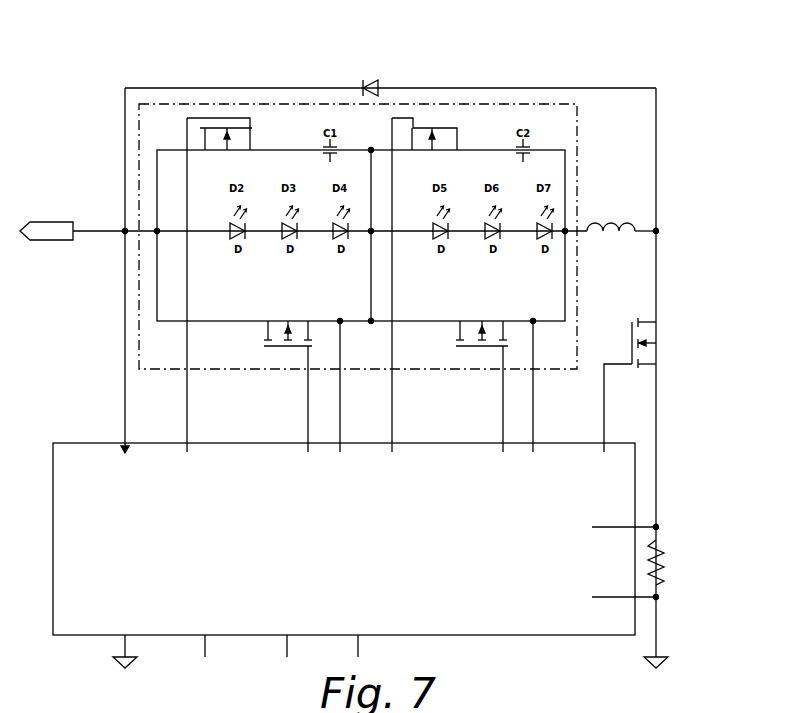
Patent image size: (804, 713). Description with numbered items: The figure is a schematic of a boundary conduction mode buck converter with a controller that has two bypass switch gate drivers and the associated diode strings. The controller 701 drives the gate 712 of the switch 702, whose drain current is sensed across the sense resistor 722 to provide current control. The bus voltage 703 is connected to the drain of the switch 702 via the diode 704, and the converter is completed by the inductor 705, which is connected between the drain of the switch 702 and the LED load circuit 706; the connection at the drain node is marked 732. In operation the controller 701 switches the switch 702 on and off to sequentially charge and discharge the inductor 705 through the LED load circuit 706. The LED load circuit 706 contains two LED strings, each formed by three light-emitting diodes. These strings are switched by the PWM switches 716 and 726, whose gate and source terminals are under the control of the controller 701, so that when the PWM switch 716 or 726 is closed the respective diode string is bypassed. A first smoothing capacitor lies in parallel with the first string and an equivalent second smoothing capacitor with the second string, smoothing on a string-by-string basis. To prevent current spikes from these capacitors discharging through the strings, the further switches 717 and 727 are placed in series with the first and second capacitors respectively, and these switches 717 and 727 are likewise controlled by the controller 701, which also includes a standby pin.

The controller 701 is at (86, 443).
The switch 702 is at (668, 343).
The Vbus 703 is at (60, 222).
The diode D1 704 is at (383, 80).
The inductor L1 705 is at (622, 215).
The LED load circuit 706 is at (139, 348).
The gate 712 is at (617, 366).
The PWM switch 716 is at (278, 322).
The further switch 717 is at (222, 115).
The sense resistor Rsense 722 is at (662, 536).
The PWM switch 726 is at (503, 316).
The further switch 727 is at (446, 122).
The drain connection of M3 732 is at (640, 321).